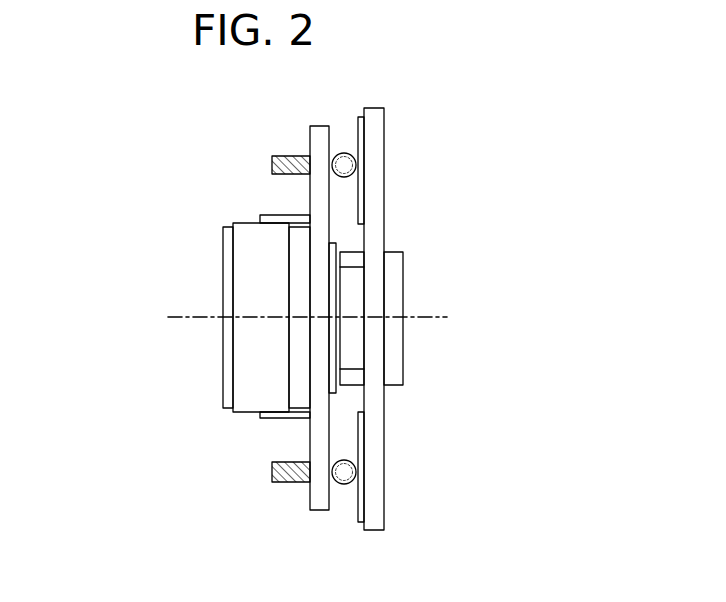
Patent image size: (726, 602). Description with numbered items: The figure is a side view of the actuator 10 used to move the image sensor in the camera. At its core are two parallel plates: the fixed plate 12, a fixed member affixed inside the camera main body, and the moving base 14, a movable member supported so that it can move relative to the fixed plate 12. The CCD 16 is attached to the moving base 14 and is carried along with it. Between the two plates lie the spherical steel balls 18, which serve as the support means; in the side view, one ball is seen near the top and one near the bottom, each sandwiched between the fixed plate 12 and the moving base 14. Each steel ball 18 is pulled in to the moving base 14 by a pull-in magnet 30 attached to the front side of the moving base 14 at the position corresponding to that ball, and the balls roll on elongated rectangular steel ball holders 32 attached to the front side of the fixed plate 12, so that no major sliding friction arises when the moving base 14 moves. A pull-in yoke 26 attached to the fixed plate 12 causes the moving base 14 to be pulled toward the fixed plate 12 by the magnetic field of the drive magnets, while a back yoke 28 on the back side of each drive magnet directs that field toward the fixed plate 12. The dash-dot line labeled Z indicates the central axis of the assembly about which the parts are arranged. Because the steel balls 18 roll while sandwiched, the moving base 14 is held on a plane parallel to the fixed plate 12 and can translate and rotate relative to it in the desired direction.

The actuator 10 is at (158, 173).
The fixed plate 12 is at (375, 152).
The moving base 14 is at (320, 142).
The CCD 16 is at (222, 265).
The steel ball 18 is at (340, 166).
The pull-in yoke 26 is at (390, 362).
The back yoke 28 is at (297, 378).
The pull-in magnet 30 is at (272, 166).
The steel ball holder 32 is at (358, 122).
The rotation axis Z is at (180, 317).